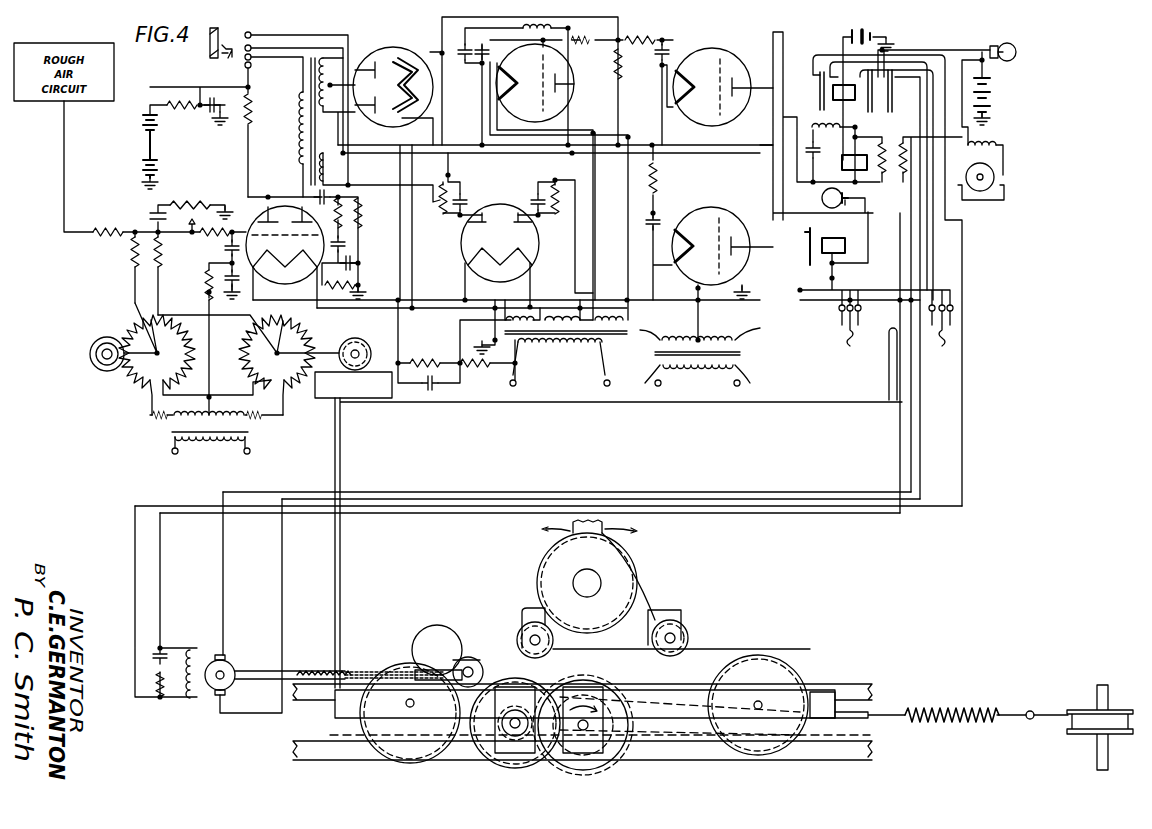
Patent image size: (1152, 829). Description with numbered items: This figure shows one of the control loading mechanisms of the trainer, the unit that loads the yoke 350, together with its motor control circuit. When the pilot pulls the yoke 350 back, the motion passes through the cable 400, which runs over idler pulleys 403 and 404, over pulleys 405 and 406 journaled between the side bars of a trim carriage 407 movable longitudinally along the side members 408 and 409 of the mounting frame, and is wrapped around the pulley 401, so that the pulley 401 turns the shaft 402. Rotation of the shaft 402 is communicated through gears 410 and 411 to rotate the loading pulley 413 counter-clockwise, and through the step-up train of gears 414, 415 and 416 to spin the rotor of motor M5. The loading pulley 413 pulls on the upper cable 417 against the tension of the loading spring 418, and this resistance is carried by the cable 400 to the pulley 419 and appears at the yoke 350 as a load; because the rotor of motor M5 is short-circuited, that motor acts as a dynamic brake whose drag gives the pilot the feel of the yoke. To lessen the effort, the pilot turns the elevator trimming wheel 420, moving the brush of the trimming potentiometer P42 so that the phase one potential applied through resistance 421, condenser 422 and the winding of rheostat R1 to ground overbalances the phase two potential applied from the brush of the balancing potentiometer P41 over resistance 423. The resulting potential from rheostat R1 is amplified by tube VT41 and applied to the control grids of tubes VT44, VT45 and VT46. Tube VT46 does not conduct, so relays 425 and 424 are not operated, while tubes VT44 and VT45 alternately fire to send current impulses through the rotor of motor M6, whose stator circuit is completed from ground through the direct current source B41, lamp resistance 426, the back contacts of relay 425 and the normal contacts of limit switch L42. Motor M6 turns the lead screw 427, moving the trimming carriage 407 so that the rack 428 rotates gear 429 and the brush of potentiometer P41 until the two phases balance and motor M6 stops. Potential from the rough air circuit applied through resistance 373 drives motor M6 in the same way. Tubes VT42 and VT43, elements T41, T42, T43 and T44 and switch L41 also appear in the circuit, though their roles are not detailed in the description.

The resistance 373 is at (104, 228).
The condenser 422 is at (151, 222).
The rheostat R1 is at (192, 200).
The resistance 421 is at (128, 255).
The resistance 423 is at (165, 252).
The trimming potentiometer P42 is at (141, 330).
The elevator trimming wheel 420 is at (103, 368).
The balancing potentiometer P41 is at (299, 331).
The gear 429 is at (362, 345).
The transformer T44 is at (173, 427).
The rack 428 is at (349, 395).
The transformer T41 is at (314, 55).
The tube VT41 is at (283, 213).
The vacuum tube VT42 is at (392, 47).
The vacuum tube VT43 is at (500, 208).
The tube VT44 is at (553, 108).
The tube VT45 is at (723, 58).
The tube VT46 is at (710, 208).
The transformer T42 is at (607, 370).
The transformer T43 is at (764, 375).
The relay 425 is at (833, 90).
The relay 424 is at (862, 157).
The lamp resistance 426 is at (1013, 52).
The source of direct current B41 is at (996, 78).
The motor M5 is at (426, 643).
The switch L41 is at (848, 332).
The limit switch L42 is at (939, 332).
The pulley 419 is at (560, 557).
The yoke 350 is at (602, 532).
The cable 400 is at (652, 620).
The idler pulley 404 is at (523, 640).
The idler pulley 403 is at (692, 633).
The side member of mounting frame 409 is at (855, 687).
The side member of mounting frame 408 is at (855, 757).
The trim carriage 407 is at (347, 717).
The pulley 405 is at (407, 745).
The gear 416 is at (448, 652).
The gear 415 is at (487, 676).
The gear 414 is at (530, 680).
The loading pulley 413 is at (487, 743).
The gear 411 is at (515, 737).
The shaft 402 is at (583, 731).
The pulley 401 is at (588, 748).
The gear 410 is at (608, 763).
The pulley 406 is at (770, 738).
The upper cable 417 is at (868, 713).
The loading spring 418 is at (957, 731).
The motor M6 is at (249, 602).
The lead screw 427 is at (293, 668).